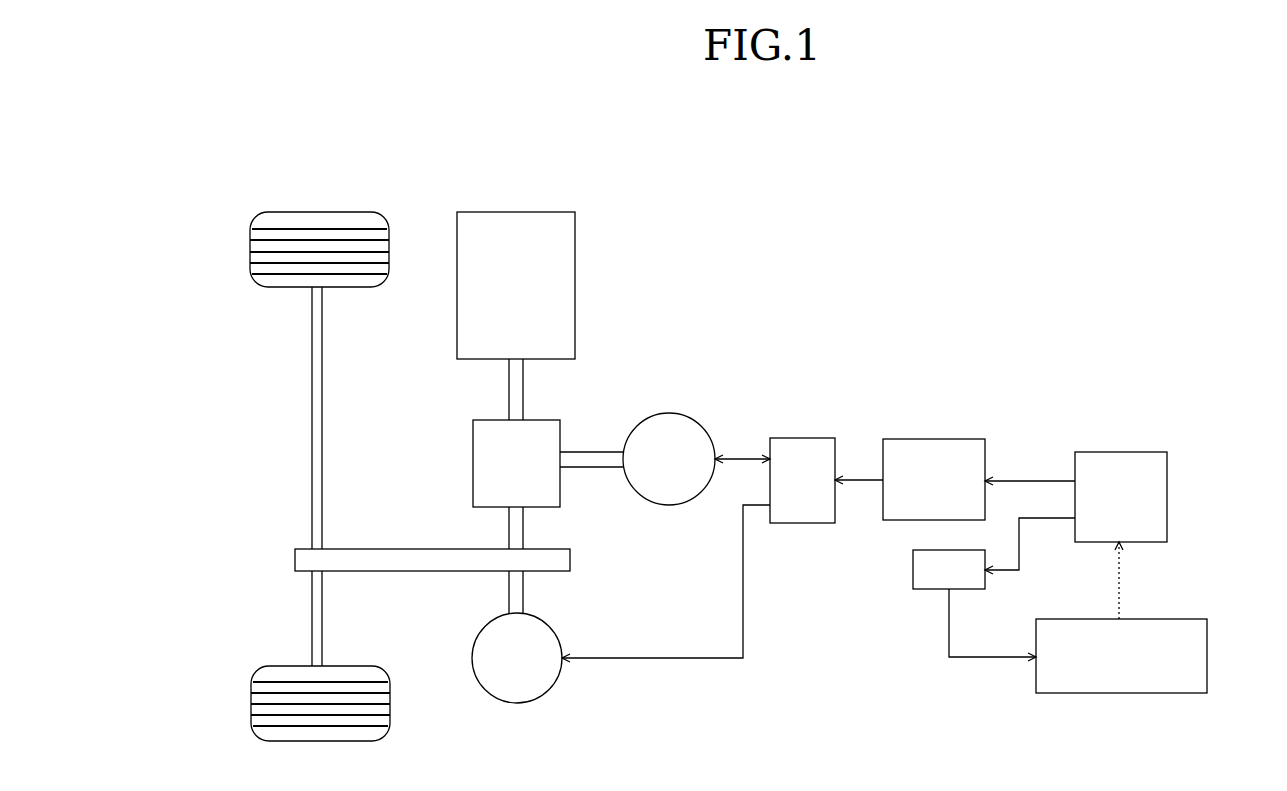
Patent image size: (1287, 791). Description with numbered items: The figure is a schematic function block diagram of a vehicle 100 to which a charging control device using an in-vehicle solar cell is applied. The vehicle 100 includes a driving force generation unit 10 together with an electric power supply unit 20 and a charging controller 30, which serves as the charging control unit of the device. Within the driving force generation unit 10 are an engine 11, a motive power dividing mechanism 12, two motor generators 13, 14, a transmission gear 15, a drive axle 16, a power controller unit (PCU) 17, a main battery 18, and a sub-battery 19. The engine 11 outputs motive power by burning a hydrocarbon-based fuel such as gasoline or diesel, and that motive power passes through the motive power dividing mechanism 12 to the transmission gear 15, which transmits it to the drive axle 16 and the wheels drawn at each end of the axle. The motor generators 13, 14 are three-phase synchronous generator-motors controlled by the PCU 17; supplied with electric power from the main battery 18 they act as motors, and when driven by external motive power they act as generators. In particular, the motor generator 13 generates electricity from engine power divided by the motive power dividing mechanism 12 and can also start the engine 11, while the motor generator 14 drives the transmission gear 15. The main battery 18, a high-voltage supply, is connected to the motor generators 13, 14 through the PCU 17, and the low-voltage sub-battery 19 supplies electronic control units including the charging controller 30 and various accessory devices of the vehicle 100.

The vehicle 100 is at (250, 155).
The driving force generation unit 10 is at (835, 293).
The engine 11 is at (537, 212).
The motive power dividing mechanism 12 is at (545, 418).
The motor generator 13 is at (698, 424).
The motor generator 14 is at (548, 624).
The transmission gear 15 is at (410, 548).
The drive axle 16 is at (312, 435).
The power controller unit (PCU) 17 is at (800, 438).
The main battery 18 is at (952, 438).
The sub-battery 19 is at (942, 548).
The electric power supply unit 20 is at (1138, 452).
The charging controller 30 is at (1207, 645).